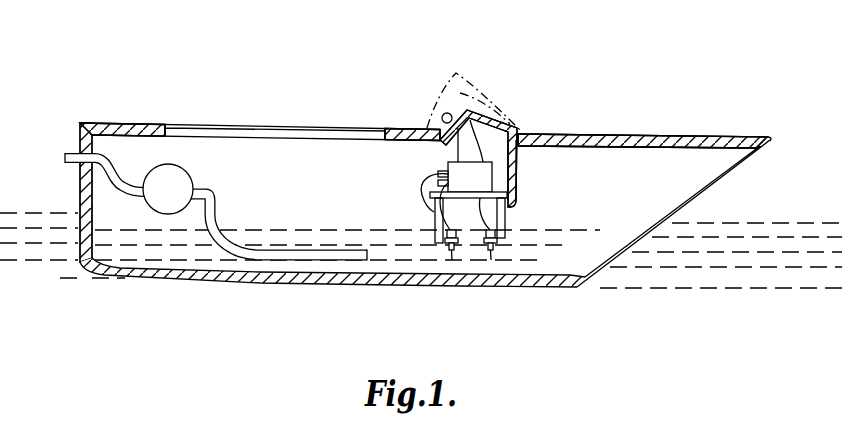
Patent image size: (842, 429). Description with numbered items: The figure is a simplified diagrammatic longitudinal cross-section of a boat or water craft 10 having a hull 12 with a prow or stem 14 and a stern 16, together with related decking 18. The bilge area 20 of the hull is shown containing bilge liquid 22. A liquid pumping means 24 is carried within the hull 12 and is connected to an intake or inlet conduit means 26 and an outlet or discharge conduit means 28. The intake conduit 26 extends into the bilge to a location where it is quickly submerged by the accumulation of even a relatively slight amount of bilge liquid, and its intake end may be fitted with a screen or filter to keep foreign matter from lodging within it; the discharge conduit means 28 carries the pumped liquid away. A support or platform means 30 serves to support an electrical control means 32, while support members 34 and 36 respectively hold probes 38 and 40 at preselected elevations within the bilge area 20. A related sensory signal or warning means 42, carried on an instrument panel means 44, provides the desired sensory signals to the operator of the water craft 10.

The boat or water craft 10 is at (409, 193).
The hull 12 is at (760, 164).
The prow or stem 14 is at (707, 193).
The stern 16 is at (80, 180).
The decking 18 is at (673, 133).
The bilge area 20 is at (418, 258).
The bilge liquid 22 is at (590, 235).
The liquid pumping means 24 is at (182, 182).
The intake or inlet conduit means 26 is at (325, 256).
The outlet or discharge conduit means 28 is at (70, 153).
The support or platform means 30 is at (519, 207).
The electrical control means 32 is at (483, 165).
The support member 34 is at (435, 213).
The support member 36 is at (507, 222).
The probe 38 is at (452, 255).
The probe 40 is at (500, 265).
The sensory signal or warning means 42 is at (443, 114).
The instrument panel means 44 is at (457, 76).